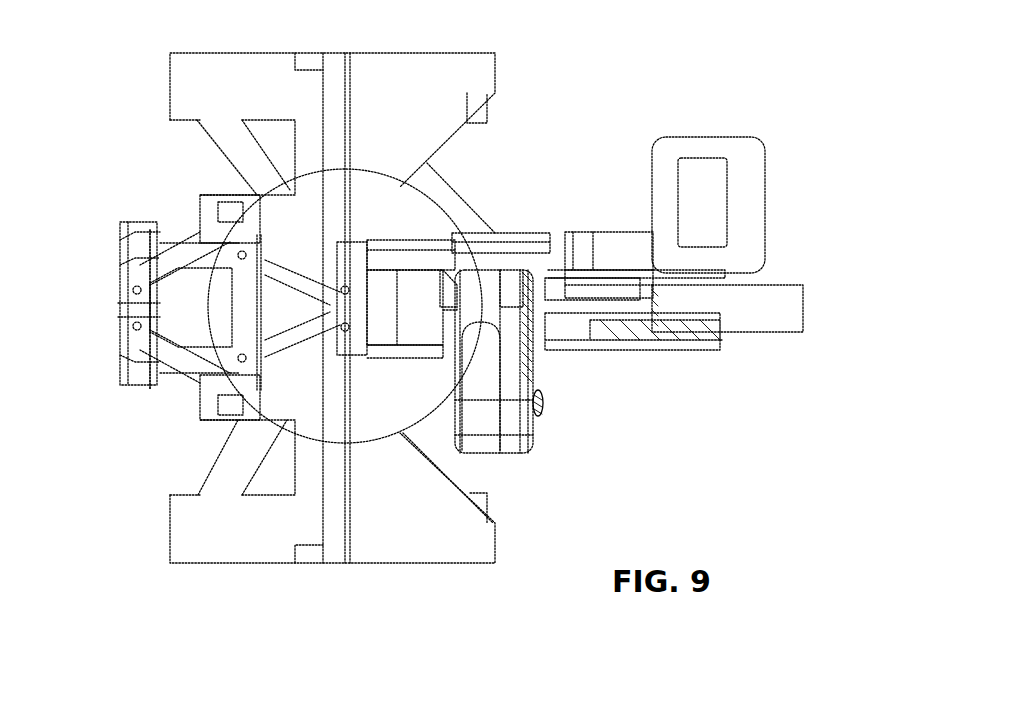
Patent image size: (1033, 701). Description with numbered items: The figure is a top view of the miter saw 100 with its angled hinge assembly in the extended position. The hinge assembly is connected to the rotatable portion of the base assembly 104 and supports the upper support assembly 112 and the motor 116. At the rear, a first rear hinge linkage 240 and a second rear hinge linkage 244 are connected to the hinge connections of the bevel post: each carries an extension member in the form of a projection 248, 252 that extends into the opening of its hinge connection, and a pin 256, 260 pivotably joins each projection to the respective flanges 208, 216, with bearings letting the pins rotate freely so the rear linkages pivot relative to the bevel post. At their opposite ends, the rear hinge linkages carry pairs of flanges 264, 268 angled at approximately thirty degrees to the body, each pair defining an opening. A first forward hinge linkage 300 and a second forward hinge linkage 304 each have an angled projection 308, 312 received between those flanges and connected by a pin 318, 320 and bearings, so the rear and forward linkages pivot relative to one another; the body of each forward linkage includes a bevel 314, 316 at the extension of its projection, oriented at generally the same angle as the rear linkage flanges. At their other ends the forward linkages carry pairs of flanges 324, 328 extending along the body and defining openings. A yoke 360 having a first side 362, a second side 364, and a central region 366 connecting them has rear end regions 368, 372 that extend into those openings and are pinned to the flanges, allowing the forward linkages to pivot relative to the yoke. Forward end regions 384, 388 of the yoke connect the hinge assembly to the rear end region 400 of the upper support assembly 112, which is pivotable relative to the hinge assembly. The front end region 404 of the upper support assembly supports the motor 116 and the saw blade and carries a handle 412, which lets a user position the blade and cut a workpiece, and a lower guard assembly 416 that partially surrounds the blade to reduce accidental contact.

The miter saw 100 is at (618, 48).
The base assembly 104 is at (490, 493).
The upper support assembly 112 is at (553, 158).
The motor 116 is at (533, 432).
The flanges 208 is at (137, 290).
The flanges 216 is at (127, 320).
The first rear hinge linkage 240 is at (177, 222).
The second rear hinge linkage 244 is at (182, 393).
The projection 248 is at (133, 253).
The projection 252 is at (133, 358).
The pin 256 is at (128, 277).
The pin 260 is at (133, 325).
The flanges 264 is at (243, 203).
The flanges 268 is at (243, 413).
The first forward hinge linkage 300 is at (328, 227).
The second forward hinge linkage 304 is at (313, 387).
The projection 308 is at (243, 220).
The projection 312 is at (243, 397).
The bevel 314 is at (263, 258).
The bevel 316 is at (263, 357).
The pin 318 is at (240, 255).
The pin 320 is at (242, 358).
The flanges 324 is at (348, 233).
The flanges 328 is at (350, 380).
The yoke 360 is at (320, 308).
The first side 362 is at (401, 263).
The second side 364 is at (407, 348).
The central region 366 is at (345, 307).
The rear end region 368 is at (360, 240).
The rear end region 372 is at (350, 363).
The forward end region 384 is at (423, 263).
The forward end region 388 is at (423, 350).
The rear end region 400 is at (402, 297).
The front end region 404 is at (705, 90).
The handle 412 is at (692, 152).
The lower guard assembly 416 is at (725, 293).